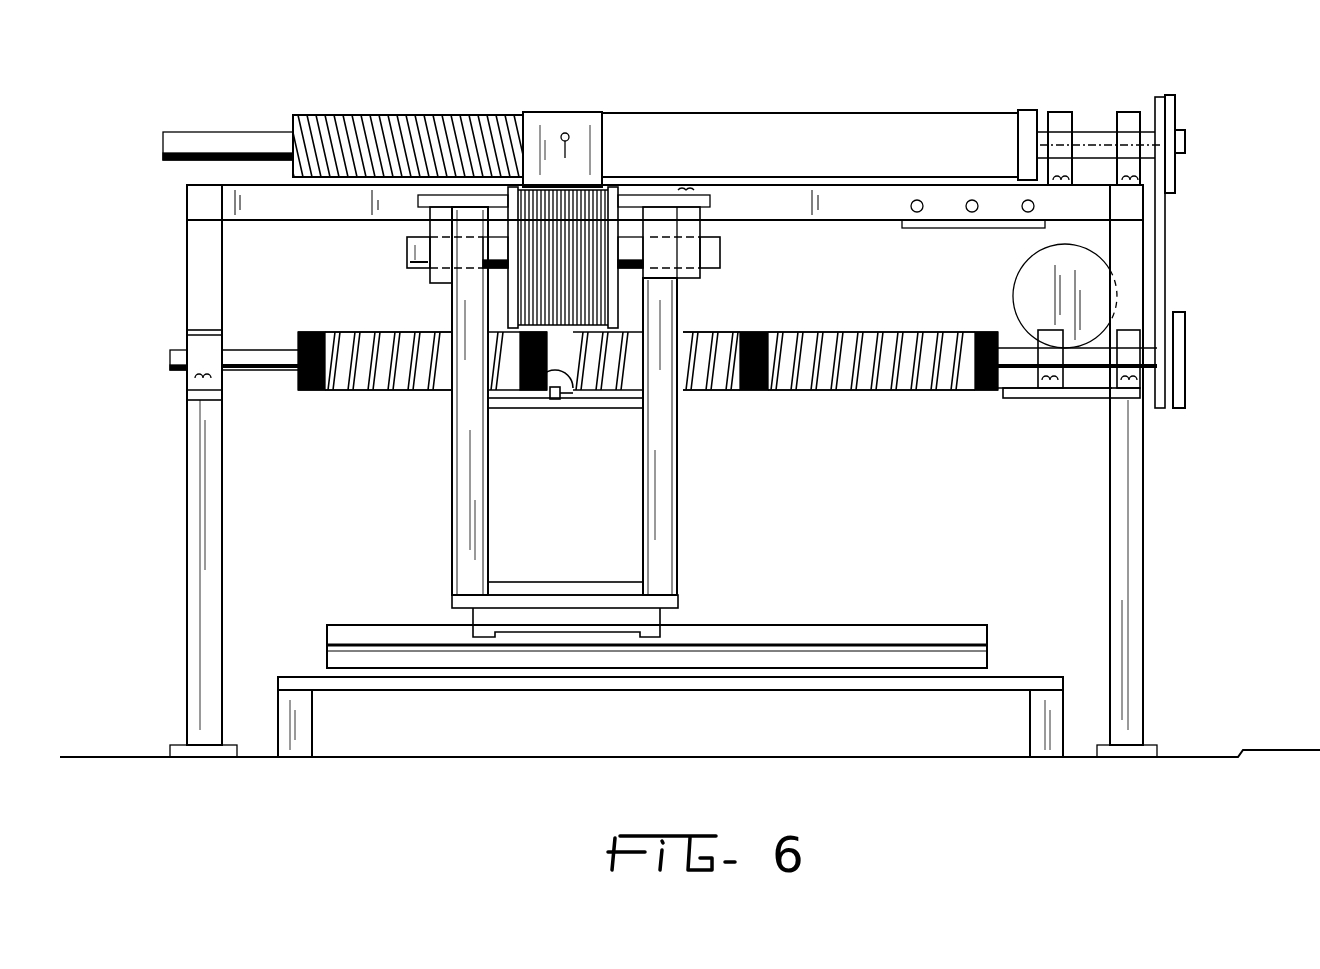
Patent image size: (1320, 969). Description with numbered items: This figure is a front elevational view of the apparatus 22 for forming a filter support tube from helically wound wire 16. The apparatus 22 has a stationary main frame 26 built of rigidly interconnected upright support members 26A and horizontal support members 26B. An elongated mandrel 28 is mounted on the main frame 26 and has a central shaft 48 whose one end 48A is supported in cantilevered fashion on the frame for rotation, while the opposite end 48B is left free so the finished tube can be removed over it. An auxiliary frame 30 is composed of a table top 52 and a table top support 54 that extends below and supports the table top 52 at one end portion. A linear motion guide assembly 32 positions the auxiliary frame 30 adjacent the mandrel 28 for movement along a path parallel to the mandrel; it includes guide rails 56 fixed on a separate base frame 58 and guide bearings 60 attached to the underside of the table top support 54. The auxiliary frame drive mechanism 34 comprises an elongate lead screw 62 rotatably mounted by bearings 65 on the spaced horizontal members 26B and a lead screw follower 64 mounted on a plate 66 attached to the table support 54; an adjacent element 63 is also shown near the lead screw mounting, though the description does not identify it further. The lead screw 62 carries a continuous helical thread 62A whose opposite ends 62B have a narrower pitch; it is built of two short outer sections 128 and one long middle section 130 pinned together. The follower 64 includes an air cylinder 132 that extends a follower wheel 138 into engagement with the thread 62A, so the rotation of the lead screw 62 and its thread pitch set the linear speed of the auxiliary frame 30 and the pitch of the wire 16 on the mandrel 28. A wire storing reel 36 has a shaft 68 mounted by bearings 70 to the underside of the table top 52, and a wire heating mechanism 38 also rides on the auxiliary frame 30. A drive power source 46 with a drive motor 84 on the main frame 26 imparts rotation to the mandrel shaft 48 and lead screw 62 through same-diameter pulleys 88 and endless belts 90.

The apparatus 22 is at (1228, 100).
The wire 16 is at (570, 157).
The stationary main frame 26 is at (185, 468).
The upright support members 26A is at (200, 567).
The horizontal support members 26B is at (817, 208).
The mandrel 28 is at (700, 112).
The auxiliary frame 30 is at (685, 455).
The linear motion guide assembly 32 is at (748, 605).
The auxiliary frame drive mechanism 34 is at (738, 320).
The wire storing reel 36 is at (506, 292).
The wire heating mechanism 38 is at (592, 98).
The drive power source 46 is at (1205, 265).
The central shaft 48 is at (1090, 128).
The supported end of central shaft 48A is at (1190, 140).
The free end of central shaft 48B is at (193, 135).
The table top 52 is at (700, 197).
The table top support 54 is at (653, 528).
The guide rails 56 is at (893, 625).
The base frame 58 is at (1010, 672).
The guide bearings 60 is at (650, 615).
The lead screw 62 is at (898, 400).
The lead screw thread 62A is at (845, 393).
The opposite ends of helical thread 62B is at (310, 335).
The support bar 63 is at (1020, 398).
The lead screw follower 64 is at (572, 403).
The bearings 65 is at (197, 343).
The plate 66 is at (500, 405).
The reel shaft 68 is at (407, 252).
The bearings 70 is at (420, 270).
The drive motor 84 is at (1047, 280).
The pulleys 88 is at (1177, 100).
The endless belts 90 is at (1167, 282).
The outer sections of lead screw 128 is at (313, 392).
The middle section of lead screw 130 is at (385, 392).
The air cylinder 132 is at (537, 392).
The follower wheel 138 is at (574, 401).